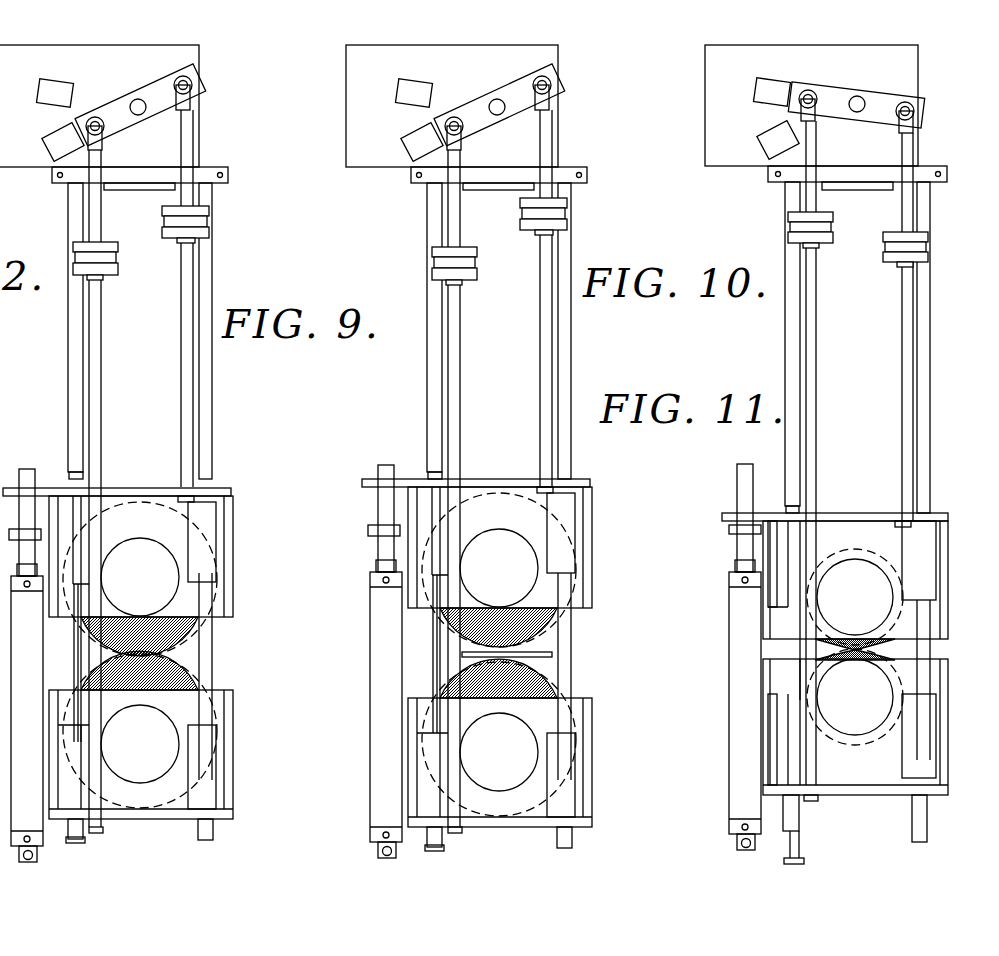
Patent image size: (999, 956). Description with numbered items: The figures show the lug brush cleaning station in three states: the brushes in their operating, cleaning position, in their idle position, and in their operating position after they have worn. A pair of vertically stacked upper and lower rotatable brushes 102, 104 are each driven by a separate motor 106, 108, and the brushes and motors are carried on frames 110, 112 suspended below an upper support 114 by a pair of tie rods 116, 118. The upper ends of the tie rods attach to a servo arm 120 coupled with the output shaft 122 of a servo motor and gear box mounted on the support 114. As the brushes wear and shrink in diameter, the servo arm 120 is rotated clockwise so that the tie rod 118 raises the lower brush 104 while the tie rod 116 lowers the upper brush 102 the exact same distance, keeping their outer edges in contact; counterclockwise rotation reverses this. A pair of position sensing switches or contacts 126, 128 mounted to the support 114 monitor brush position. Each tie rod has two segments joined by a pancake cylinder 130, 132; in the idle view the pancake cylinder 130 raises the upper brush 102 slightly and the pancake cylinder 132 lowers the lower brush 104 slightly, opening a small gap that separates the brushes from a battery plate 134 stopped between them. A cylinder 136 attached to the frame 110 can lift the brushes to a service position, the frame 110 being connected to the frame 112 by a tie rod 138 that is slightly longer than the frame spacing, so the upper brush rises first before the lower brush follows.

In FIG. 10, the upper rotatable brush 102 is at (548, 628).
In FIG. 9, the upper rotatable brush 102 is at (195, 641).
In FIG. 11, the upper rotatable brush 102 is at (895, 640).
In FIG. 10, the lower rotatable brush 104 is at (558, 686).
In FIG. 9, the lower rotatable brush 104 is at (178, 681).
In FIG. 11, the lower rotatable brush 104 is at (835, 660).
In FIG. 10, the motor 106 is at (522, 555).
In FIG. 9, the motor 106 is at (163, 567).
In FIG. 11, the motor 106 is at (852, 580).
In FIG. 10, the motor 108 is at (530, 746).
In FIG. 9, the motor 108 is at (165, 740).
In FIG. 11, the motor 108 is at (840, 722).
In FIG. 10, the frame 110 is at (583, 485).
In FIG. 9, the frame 110 is at (230, 508).
In FIG. 11, the frame 110 is at (873, 518).
In FIG. 10, the frame 112 is at (587, 790).
In FIG. 9, the frame 112 is at (230, 782).
In FIG. 11, the frame 112 is at (842, 788).
In FIG. 10, the upper support 114 is at (567, 172).
In FIG. 9, the upper support 114 is at (208, 172).
In FIG. 11, the upper support 114 is at (768, 182).
In FIG. 10, the tie rod 116 is at (541, 310).
In FIG. 9, the tie rod 116 is at (193, 400).
In FIG. 11, the tie rod 116 is at (903, 293).
In FIG. 10, the tie rod 118 is at (455, 418).
In FIG. 9, the tie rod 118 is at (94, 387).
In FIG. 11, the tie rod 118 is at (815, 372).
In FIG. 10, the servo arm 120 is at (555, 67).
In FIG. 9, the servo arm 120 is at (193, 67).
In FIG. 11, the servo arm 120 is at (886, 102).
In FIG. 10, the output shaft 122 is at (492, 103).
In FIG. 9, the output shaft 122 is at (135, 100).
In FIG. 11, the output shaft 122 is at (855, 103).
In FIG. 10, the position sensing switch 126 is at (405, 148).
In FIG. 9, the position sensing switch 126 is at (47, 147).
In FIG. 11, the position sensing switch 126 is at (762, 150).
In FIG. 10, the position sensing switch 128 is at (398, 92).
In FIG. 9, the position sensing switch 128 is at (42, 95).
In FIG. 11, the position sensing switch 128 is at (752, 92).
In FIG. 10, the pancake cylinder 130 is at (565, 204).
In FIG. 9, the pancake cylinder 130 is at (162, 226).
In FIG. 11, the pancake cylinder 130 is at (927, 252).
In FIG. 10, the pancake cylinder 132 is at (436, 252).
In FIG. 9, the pancake cylinder 132 is at (112, 262).
In FIG. 11, the pancake cylinder 132 is at (787, 218).
In FIG. 10, the battery plate 134 is at (548, 655).
In FIG. 10, the cylinder 136 is at (372, 745).
In FIG. 9, the cylinder 136 is at (18, 848).
In FIG. 11, the cylinder 136 is at (734, 762).
In FIG. 10, the tie rod 138 is at (435, 640).
In FIG. 9, the tie rod 138 is at (78, 647).
In FIG. 11, the tie rod 138 is at (795, 832).